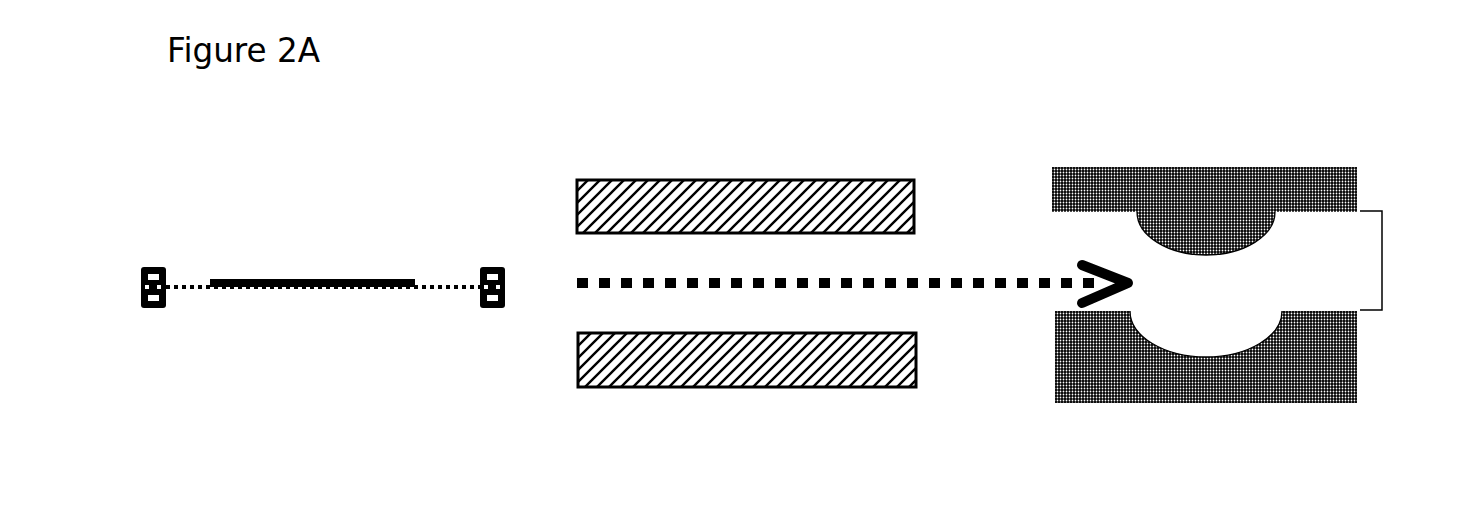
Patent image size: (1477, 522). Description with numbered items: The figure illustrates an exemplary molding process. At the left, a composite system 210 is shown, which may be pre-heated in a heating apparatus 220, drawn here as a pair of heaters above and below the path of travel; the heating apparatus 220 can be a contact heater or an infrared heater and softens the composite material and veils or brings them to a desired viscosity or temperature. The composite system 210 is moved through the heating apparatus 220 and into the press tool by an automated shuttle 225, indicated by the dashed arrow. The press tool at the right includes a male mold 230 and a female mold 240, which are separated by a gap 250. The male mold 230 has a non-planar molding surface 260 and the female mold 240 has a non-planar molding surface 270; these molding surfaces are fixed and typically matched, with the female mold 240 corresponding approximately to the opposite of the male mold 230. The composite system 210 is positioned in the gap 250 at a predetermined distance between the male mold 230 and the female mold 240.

The composite system 210 is at (187, 262).
The heating apparatus 220 is at (700, 180).
The automated shuttle 225 is at (957, 280).
The male mold 230 is at (1204, 198).
The female mold 240 is at (1206, 390).
The gap 250 is at (1382, 255).
The non-planar molding surface 260 is at (1192, 254).
The non-planar molding surface 270 is at (1218, 353).